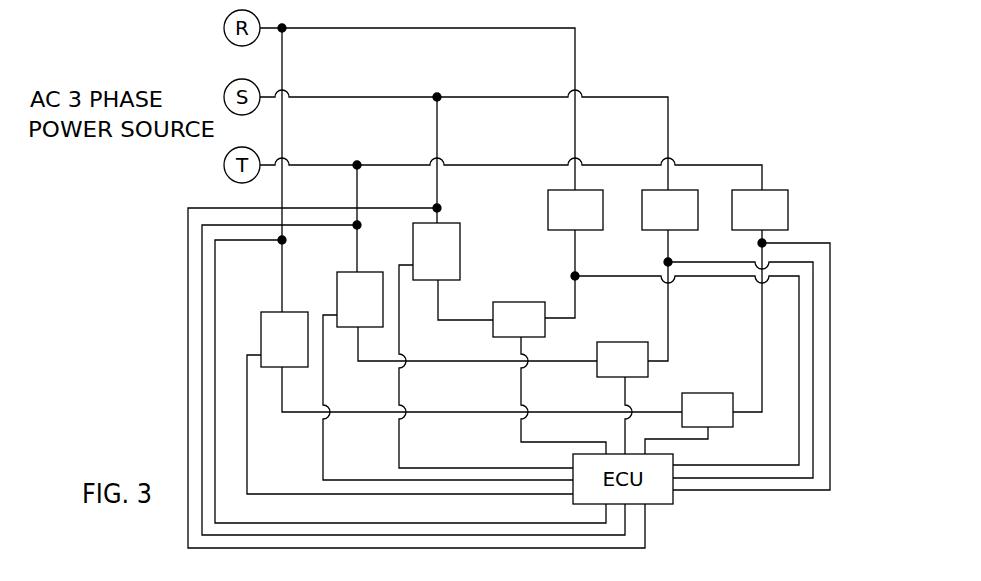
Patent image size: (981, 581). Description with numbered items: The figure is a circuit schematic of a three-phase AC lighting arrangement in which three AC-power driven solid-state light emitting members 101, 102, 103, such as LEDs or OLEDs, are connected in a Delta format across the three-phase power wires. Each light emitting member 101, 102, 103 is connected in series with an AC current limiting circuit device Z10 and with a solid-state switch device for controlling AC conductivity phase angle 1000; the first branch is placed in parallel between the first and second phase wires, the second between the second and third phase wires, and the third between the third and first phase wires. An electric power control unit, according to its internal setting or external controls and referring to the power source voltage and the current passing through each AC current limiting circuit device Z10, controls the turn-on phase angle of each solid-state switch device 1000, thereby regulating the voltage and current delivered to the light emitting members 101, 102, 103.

The AC-power driven solid-state light emitting member 101 is at (575, 210).
The AC-power driven solid-state light emitting member 102 is at (670, 210).
The AC-power driven solid-state light emitting member 103 is at (760, 210).
The AC current limiting circuit device Z10 is at (261, 340).
The solid-state switch device for controlling AC conductivity phase angle 1000 is at (519, 315).